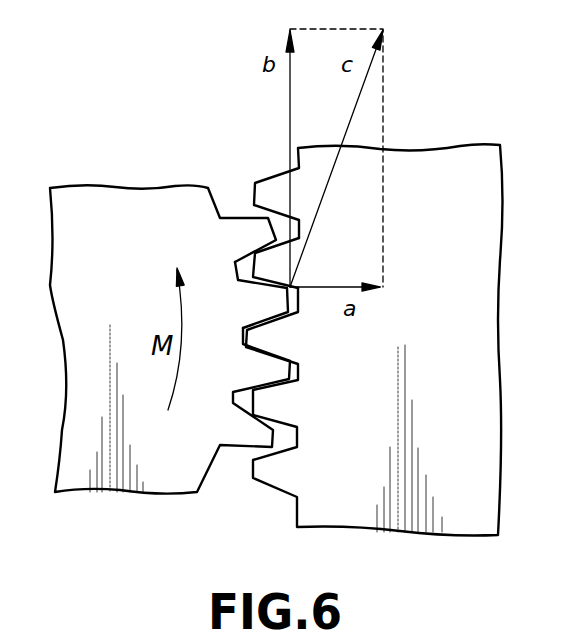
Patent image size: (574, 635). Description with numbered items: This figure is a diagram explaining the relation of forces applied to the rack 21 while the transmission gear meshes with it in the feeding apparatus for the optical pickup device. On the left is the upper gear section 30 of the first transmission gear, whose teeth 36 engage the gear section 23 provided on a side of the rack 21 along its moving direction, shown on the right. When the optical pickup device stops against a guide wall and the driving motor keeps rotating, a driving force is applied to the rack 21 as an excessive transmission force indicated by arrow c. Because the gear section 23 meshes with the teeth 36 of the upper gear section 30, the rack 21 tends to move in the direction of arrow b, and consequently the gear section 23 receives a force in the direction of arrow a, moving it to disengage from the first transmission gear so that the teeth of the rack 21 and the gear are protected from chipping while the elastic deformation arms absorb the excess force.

The rack 21 is at (354, 301).
The gear section 23 is at (268, 258).
The upper gear section 30 is at (161, 298).
The teeth 36 is at (258, 303).